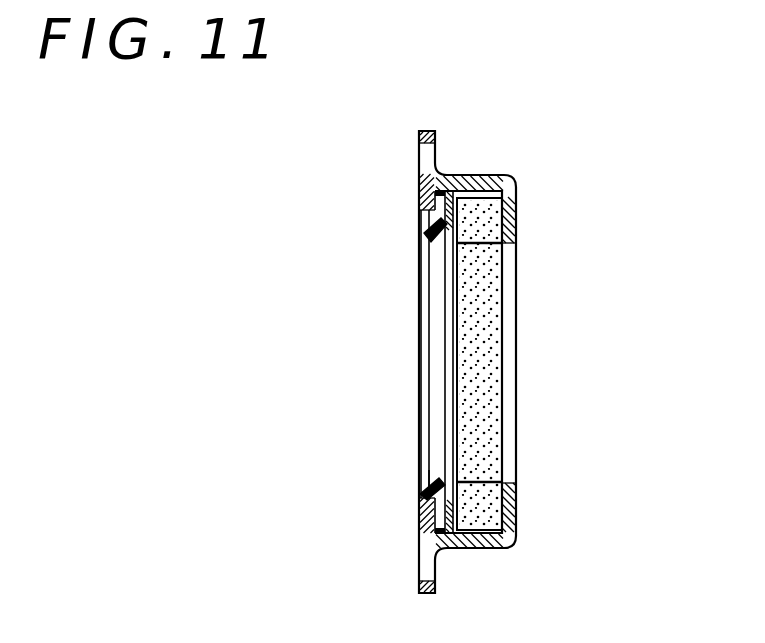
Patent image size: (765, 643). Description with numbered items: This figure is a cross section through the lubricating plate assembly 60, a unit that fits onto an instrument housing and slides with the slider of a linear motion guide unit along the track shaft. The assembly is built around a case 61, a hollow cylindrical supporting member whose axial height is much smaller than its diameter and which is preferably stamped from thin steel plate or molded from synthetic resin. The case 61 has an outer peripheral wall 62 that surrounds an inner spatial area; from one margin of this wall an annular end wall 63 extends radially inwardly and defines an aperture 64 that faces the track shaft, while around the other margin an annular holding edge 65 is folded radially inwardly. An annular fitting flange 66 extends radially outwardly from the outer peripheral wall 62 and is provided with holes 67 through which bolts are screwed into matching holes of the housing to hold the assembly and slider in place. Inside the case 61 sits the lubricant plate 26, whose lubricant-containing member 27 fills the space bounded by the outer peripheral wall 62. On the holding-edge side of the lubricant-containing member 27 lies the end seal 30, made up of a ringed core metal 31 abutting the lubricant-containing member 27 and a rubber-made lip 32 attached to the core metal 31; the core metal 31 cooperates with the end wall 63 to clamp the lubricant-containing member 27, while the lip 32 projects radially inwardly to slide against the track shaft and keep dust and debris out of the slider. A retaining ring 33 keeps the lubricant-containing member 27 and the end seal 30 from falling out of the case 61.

The lubricant plate 26 is at (490, 348).
The lubricant-containing member 27 is at (492, 398).
The end seal 30 is at (443, 313).
The core metal 31 is at (424, 497).
The rubber-made lip 32 is at (437, 388).
The retaining ring 33 is at (436, 223).
The lubricating plate assembly 60 is at (485, 172).
The case 61 is at (497, 178).
The outer peripheral wall 62 is at (478, 182).
The annular end wall 63 is at (508, 216).
The aperture 64 is at (513, 250).
The annular holding edge 65 is at (426, 192).
The annular fitting flange 66 is at (419, 140).
The holes 67 is at (428, 160).